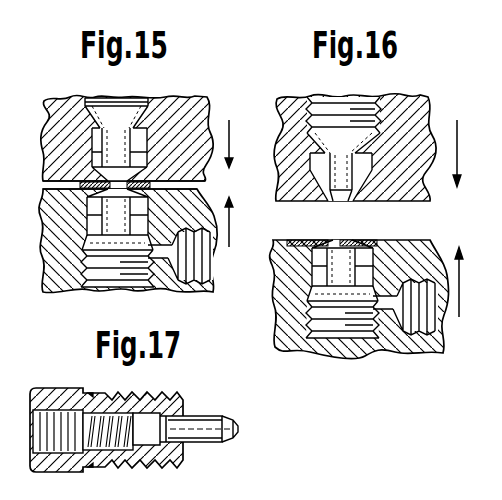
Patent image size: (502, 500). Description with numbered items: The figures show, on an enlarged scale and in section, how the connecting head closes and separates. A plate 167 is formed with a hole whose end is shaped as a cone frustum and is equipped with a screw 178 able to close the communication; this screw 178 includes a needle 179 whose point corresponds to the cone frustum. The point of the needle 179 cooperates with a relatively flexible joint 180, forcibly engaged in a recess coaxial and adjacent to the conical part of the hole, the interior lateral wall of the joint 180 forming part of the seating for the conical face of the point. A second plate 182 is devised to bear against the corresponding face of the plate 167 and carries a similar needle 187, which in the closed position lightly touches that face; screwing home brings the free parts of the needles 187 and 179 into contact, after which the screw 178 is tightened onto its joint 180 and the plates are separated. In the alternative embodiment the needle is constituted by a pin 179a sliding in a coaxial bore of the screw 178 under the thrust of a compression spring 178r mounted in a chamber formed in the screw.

In FIG. 15, the plate 182 is at (50, 108).
In FIG. 16, the plate 182 is at (286, 117).
In FIG. 15, the joint 180 is at (80, 185).
In FIG. 16, the joint 180 is at (362, 240).
In FIG. 15, the needle 187 is at (102, 200).
In FIG. 15, the needle 179 is at (65, 276).
In FIG. 15, the plate 167 is at (108, 258).
In FIG. 16, the plate 167 is at (404, 343).
In FIG. 17, the screw 178 is at (124, 415).
In FIG. 17, the compression spring 178r is at (90, 418).
In FIG. 17, the pin 179a is at (205, 440).